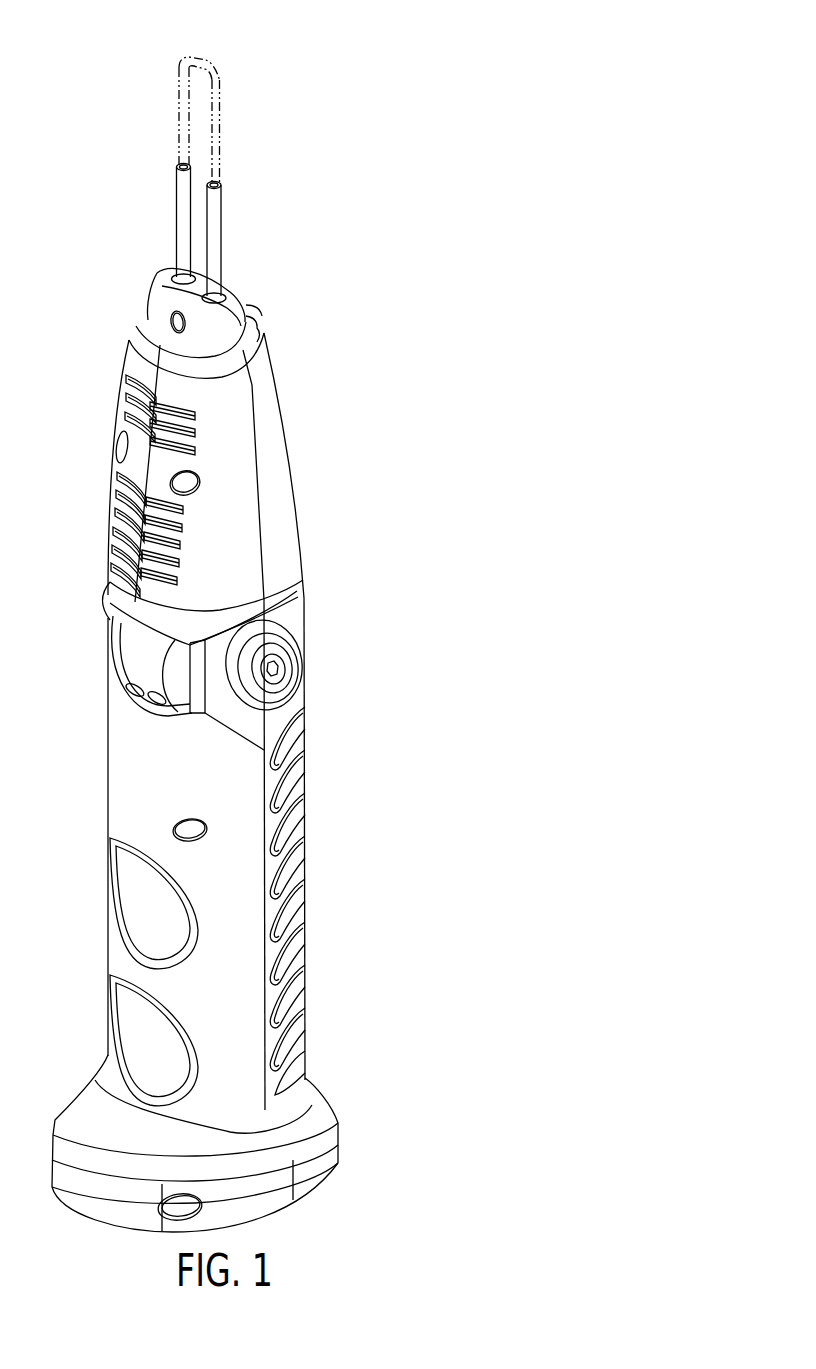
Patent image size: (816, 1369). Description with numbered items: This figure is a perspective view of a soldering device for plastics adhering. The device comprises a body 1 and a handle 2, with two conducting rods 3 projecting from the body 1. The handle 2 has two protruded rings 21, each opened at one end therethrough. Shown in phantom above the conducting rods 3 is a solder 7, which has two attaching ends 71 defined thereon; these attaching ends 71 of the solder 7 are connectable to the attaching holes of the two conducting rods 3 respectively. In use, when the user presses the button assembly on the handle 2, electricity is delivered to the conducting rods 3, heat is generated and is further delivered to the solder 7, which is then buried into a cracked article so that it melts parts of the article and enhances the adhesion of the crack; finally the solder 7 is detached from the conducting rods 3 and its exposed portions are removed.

The body 1 is at (323, 440).
The handle 2 is at (342, 918).
The protruded ring 21 is at (297, 658).
The conducting rod 3 is at (222, 241).
The solder 7 is at (204, 63).
The attaching end 71 is at (216, 167).